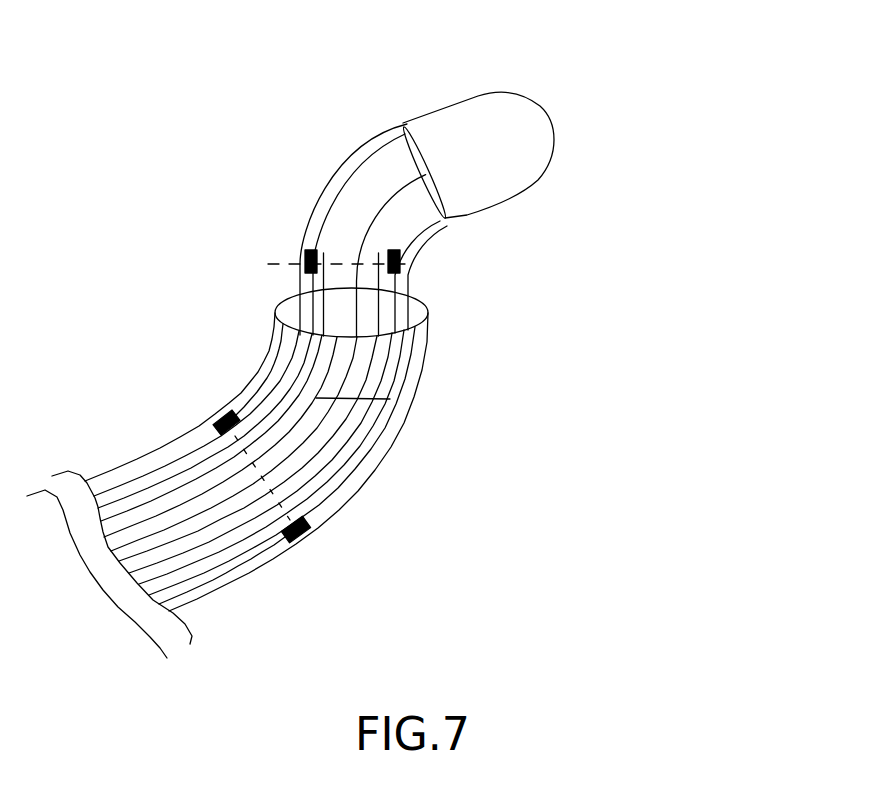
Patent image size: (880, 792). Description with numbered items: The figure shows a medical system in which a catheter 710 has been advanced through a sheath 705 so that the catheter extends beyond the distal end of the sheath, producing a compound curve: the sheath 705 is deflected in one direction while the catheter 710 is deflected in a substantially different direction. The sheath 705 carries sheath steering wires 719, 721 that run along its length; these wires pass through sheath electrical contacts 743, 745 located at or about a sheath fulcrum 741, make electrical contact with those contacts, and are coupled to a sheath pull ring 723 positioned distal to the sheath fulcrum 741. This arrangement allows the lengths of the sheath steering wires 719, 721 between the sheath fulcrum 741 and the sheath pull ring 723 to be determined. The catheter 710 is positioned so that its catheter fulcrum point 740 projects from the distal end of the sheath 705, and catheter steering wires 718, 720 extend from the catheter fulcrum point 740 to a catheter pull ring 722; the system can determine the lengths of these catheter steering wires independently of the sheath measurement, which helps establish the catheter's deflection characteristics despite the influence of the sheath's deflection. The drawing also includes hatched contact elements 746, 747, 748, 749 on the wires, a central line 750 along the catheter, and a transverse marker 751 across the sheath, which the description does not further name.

The sheath 705 is at (387, 457).
The catheter 710 is at (481, 97).
The catheter steering wire 718 is at (416, 236).
The sheath steering wire 719 is at (208, 585).
The catheter steering wire 720 is at (383, 142).
The sheath steering wire 721 is at (130, 461).
The catheter pull ring 722 is at (429, 165).
The sheath pull ring 723 is at (430, 305).
The catheter fulcrum point 740 is at (316, 265).
The sheath fulcrum 741 is at (219, 407).
The sheath electrical contact 743 is at (313, 532).
The sheath electrical contact 745 is at (234, 404).
The sensor element 746 is at (389, 257).
The sensor element 747 is at (303, 541).
The sensor element 748 is at (318, 260).
The sensor element 749 is at (196, 437).
The center line 750 is at (378, 207).
The marker line 751 is at (390, 399).